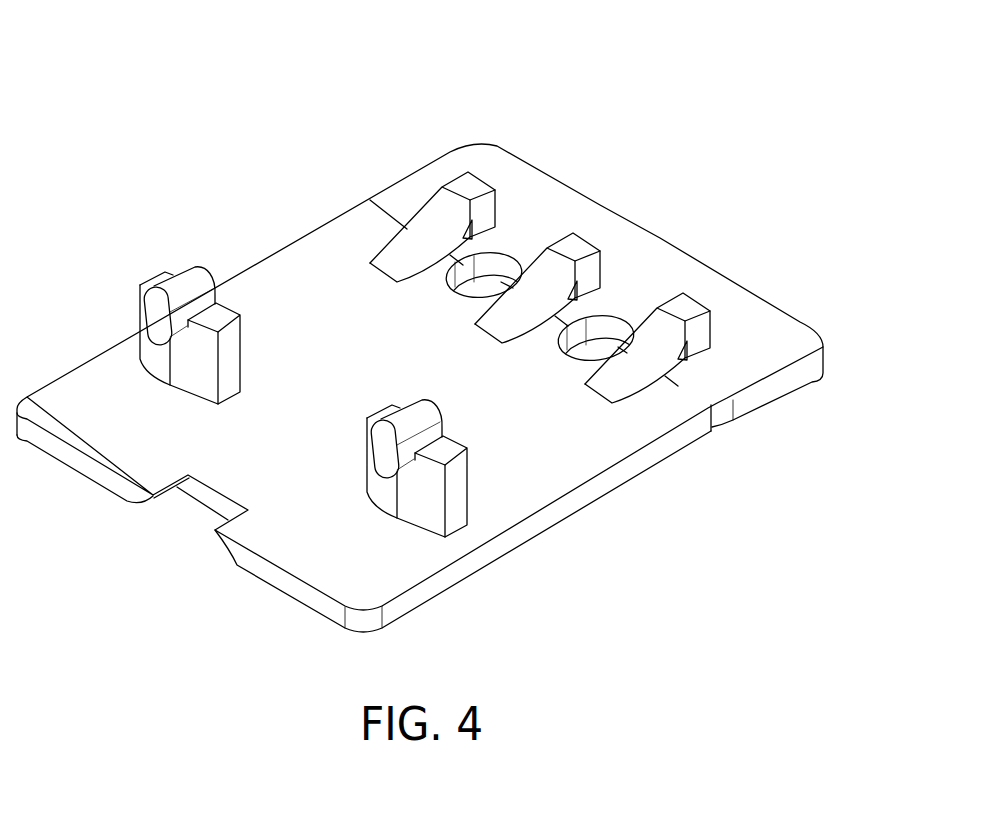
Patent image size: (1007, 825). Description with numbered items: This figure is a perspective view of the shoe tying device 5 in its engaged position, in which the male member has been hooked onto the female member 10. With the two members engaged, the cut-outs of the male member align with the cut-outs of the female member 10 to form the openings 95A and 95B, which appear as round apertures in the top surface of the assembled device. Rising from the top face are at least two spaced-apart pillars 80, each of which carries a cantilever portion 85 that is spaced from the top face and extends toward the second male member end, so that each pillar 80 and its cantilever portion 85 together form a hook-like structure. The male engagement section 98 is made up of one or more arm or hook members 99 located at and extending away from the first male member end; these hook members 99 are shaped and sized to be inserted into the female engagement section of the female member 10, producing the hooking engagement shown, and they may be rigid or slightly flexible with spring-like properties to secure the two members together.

The shoe tying device 5 is at (132, 82).
The female member 10 is at (797, 397).
The pillars 80 is at (231, 300).
The cantilever portion 85 is at (185, 274).
The male engagement section 98 is at (427, 213).
The hook members 99 is at (482, 187).
The opening 95A is at (492, 283).
The opening 95B is at (603, 338).